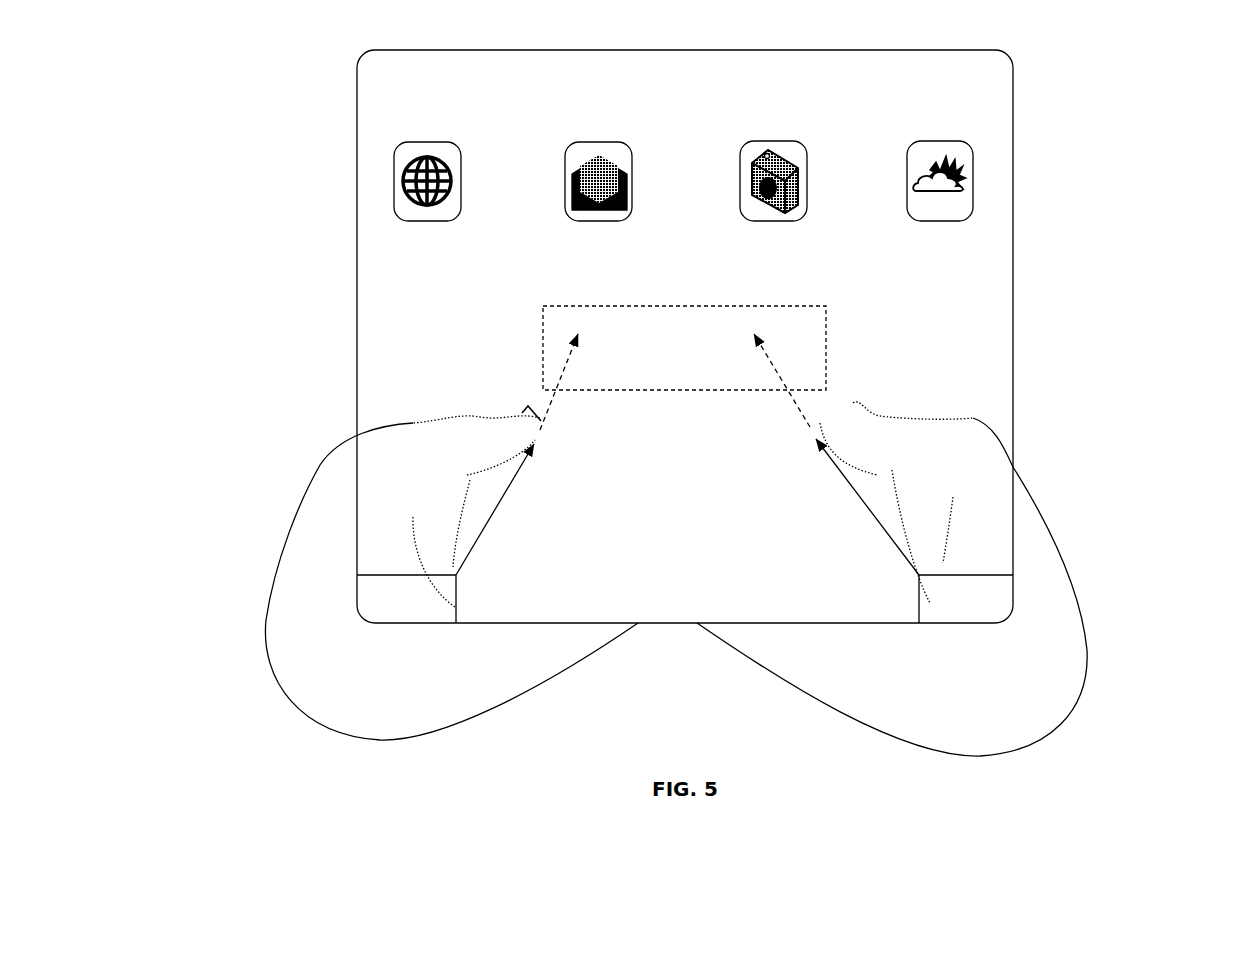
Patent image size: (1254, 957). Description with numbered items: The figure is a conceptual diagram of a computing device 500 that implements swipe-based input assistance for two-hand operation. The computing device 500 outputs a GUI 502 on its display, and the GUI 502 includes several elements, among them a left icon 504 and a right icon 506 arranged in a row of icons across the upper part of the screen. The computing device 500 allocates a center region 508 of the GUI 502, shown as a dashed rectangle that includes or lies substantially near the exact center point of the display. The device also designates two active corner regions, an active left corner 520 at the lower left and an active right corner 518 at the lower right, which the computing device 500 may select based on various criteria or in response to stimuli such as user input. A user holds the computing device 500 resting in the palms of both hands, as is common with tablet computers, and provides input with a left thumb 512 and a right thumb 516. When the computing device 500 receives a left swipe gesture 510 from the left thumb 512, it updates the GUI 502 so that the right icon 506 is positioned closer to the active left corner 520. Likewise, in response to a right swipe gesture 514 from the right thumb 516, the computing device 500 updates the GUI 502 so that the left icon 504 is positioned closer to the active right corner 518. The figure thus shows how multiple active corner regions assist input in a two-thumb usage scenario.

The computing device 500 is at (1010, 52).
The GUI 502 is at (960, 97).
The left icon 504 is at (394, 158).
The right icon 506 is at (973, 153).
The center region 508 is at (543, 350).
The left swipe gesture 510 is at (527, 409).
The left thumb 512 is at (540, 420).
The right swipe gesture 514 is at (805, 410).
The right thumb 516 is at (835, 418).
The active right corner 518 is at (973, 601).
The active left corner 520 is at (390, 602).